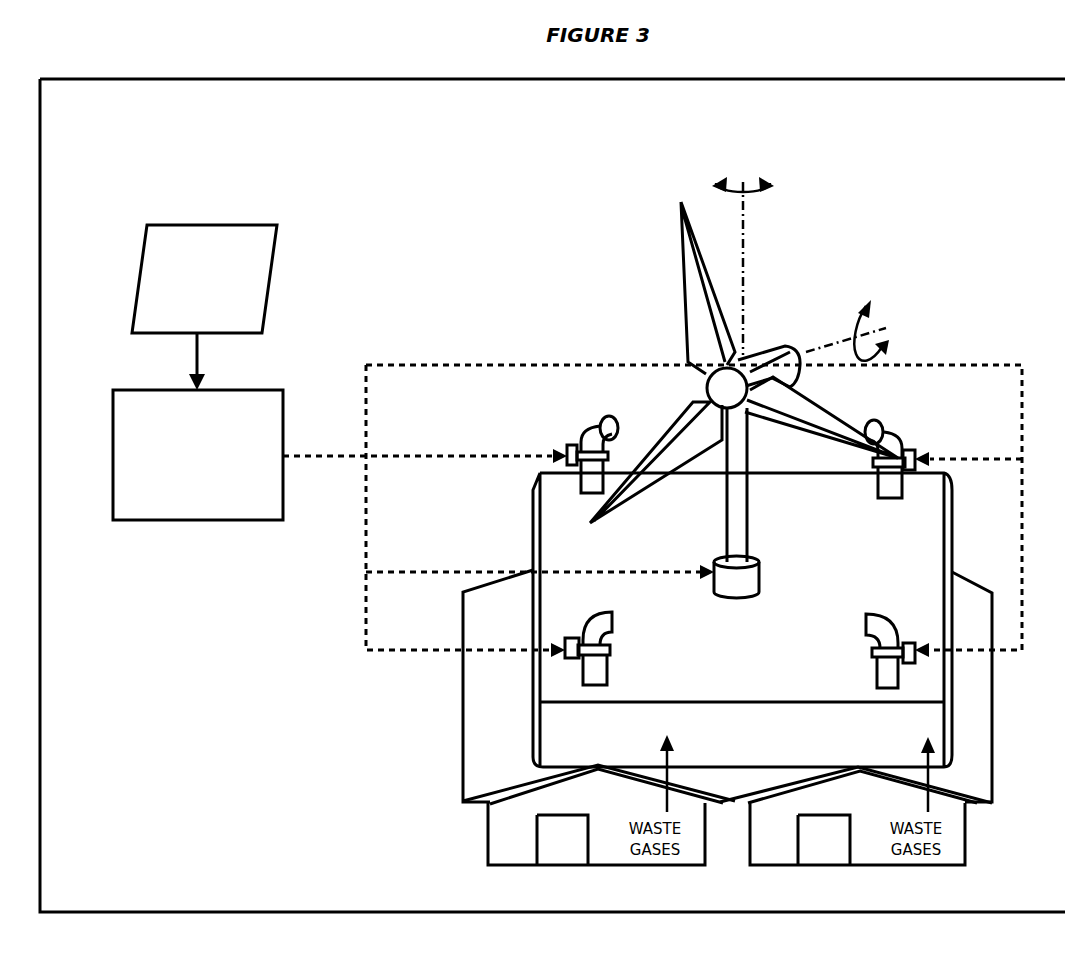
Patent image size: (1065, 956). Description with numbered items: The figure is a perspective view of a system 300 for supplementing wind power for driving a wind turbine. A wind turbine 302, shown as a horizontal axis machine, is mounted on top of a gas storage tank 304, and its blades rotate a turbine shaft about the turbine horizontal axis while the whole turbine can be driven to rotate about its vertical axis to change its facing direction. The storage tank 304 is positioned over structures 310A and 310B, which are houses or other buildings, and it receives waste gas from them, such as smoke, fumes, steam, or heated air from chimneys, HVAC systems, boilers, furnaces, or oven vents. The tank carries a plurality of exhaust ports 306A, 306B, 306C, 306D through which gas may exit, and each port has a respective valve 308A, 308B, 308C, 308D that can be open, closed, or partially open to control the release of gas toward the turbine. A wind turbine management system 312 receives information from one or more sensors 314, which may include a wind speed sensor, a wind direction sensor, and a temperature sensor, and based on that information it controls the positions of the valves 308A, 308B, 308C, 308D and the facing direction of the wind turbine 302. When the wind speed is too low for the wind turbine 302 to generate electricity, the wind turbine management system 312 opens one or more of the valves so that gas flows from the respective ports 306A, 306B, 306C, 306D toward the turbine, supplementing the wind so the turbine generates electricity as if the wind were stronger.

The system for supplementing wind power 300 is at (124, 122).
The wind turbine 302 is at (684, 268).
The gas storage tank 304 is at (760, 647).
The exhaust port 306A is at (600, 419).
The exhaust port 306B is at (948, 399).
The exhaust port 306C is at (677, 612).
The exhaust port 306D is at (866, 617).
The valve 308A is at (569, 445).
The valve 308B is at (914, 450).
The valve 308C is at (572, 640).
The valve 308D is at (911, 643).
The structure 310A is at (463, 780).
The structure 310B is at (1053, 753).
The wind turbine management system 312 is at (184, 498).
The sensors 314 is at (191, 301).